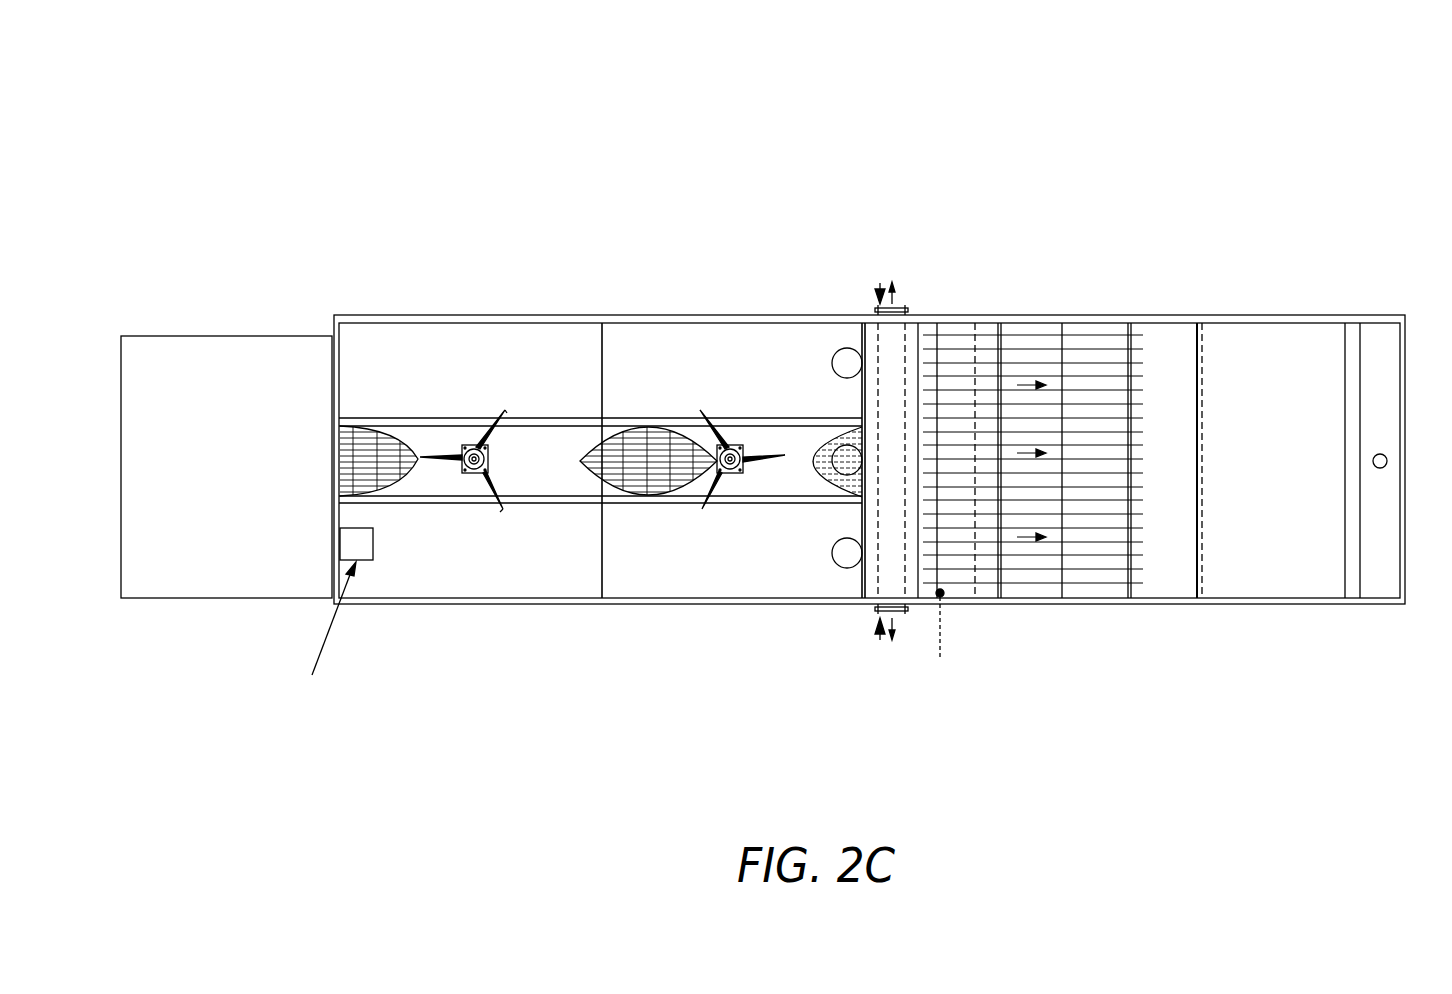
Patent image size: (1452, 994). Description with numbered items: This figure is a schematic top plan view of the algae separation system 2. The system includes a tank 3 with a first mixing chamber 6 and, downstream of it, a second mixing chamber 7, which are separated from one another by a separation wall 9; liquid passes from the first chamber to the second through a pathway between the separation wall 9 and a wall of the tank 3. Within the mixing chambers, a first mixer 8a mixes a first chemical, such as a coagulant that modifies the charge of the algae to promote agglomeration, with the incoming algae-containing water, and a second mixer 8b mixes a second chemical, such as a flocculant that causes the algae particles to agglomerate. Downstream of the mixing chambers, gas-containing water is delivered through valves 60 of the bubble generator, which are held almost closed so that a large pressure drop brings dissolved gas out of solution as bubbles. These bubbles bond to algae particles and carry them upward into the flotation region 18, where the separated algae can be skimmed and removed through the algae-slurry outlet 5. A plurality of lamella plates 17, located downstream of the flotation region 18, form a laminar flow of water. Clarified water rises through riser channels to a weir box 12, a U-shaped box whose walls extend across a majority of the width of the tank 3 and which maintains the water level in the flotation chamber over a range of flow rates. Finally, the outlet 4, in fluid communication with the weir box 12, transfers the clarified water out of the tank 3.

The algae separation system 2 is at (238, 113).
The tank 3 is at (452, 321).
The outlet 4 is at (880, 283).
The algae-slurry outlet 5 is at (1383, 474).
The first mixing chamber 6 is at (466, 396).
The second mixing chamber 7 is at (724, 396).
The first mixer 8a is at (470, 473).
The second mixer 8b is at (730, 473).
The separation wall 9 is at (602, 530).
The weir box 12 is at (892, 550).
The lamella plates 17 is at (1075, 555).
The flotation region 18 is at (1180, 565).
The valve 60 is at (832, 553).